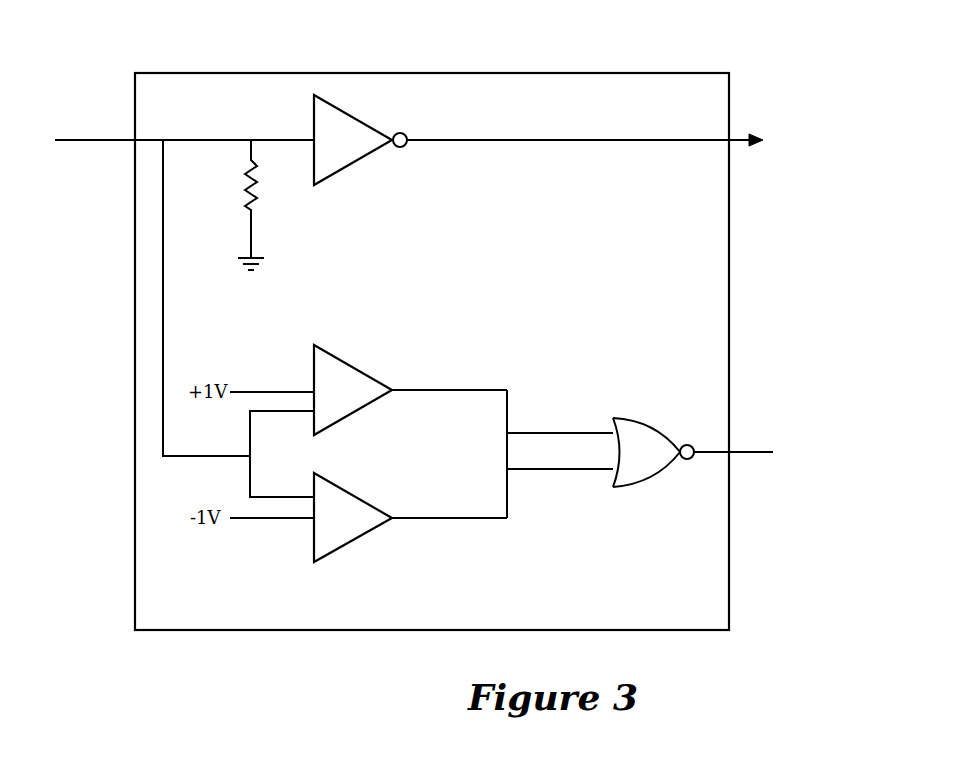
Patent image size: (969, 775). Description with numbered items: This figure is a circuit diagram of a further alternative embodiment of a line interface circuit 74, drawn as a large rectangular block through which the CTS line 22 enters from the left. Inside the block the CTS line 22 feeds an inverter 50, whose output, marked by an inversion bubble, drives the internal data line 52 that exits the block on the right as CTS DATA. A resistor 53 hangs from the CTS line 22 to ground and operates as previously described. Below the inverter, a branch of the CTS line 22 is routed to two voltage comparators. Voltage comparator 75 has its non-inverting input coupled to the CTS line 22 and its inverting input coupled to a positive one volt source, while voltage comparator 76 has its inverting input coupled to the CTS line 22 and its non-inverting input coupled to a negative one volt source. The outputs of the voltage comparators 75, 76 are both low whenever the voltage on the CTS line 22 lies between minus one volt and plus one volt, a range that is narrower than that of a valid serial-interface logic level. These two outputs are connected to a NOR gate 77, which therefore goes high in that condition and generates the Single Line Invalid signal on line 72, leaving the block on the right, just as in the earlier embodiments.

The line interface circuit 74 is at (200, 73).
The CTS line 22 is at (112, 143).
The inverter 50 is at (340, 110).
The internal data line 52 is at (582, 142).
The resistor 53 is at (248, 202).
The voltage comparator 75 is at (355, 368).
The voltage comparator 76 is at (363, 497).
The NOR gate 77 is at (625, 417).
The line 72 is at (750, 450).